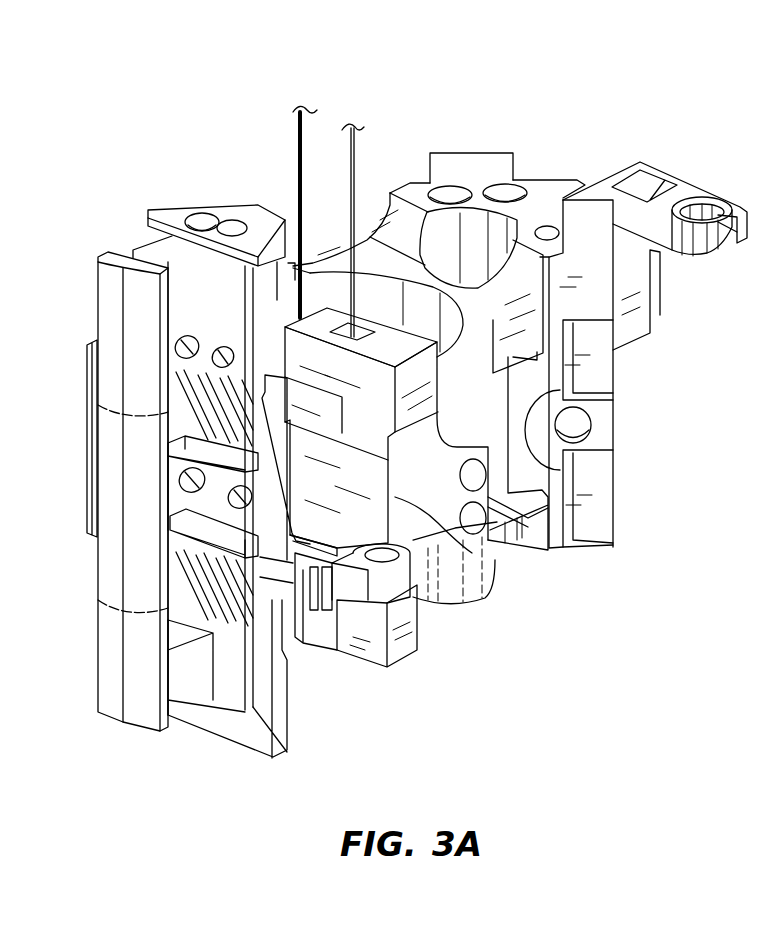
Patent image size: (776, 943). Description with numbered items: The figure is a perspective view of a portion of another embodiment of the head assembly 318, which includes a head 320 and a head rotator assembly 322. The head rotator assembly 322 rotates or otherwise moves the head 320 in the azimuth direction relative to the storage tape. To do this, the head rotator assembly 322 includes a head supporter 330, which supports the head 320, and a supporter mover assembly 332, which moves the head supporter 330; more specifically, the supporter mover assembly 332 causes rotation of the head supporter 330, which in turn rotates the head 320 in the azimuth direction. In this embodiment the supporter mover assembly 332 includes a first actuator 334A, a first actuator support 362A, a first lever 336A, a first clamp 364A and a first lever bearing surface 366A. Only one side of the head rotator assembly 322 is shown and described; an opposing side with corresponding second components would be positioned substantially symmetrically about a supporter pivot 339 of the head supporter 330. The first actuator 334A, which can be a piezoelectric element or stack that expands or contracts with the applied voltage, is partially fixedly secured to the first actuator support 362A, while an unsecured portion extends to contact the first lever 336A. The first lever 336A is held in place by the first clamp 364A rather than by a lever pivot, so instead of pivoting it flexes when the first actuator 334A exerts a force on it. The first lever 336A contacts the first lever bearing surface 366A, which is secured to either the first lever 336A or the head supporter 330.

The head assembly 318 is at (450, 128).
The head 320 is at (140, 712).
The head rotator assembly 322 is at (490, 477).
The head supporter 330 is at (233, 691).
The supporter mover assembly 332 is at (516, 459).
The first actuator 334A is at (380, 513).
The first lever 336A is at (373, 636).
The supporter pivot 339 is at (178, 470).
The first actuator support 362A is at (367, 497).
The first clamp 364A is at (397, 580).
The first lever bearing surface 366A is at (440, 352).